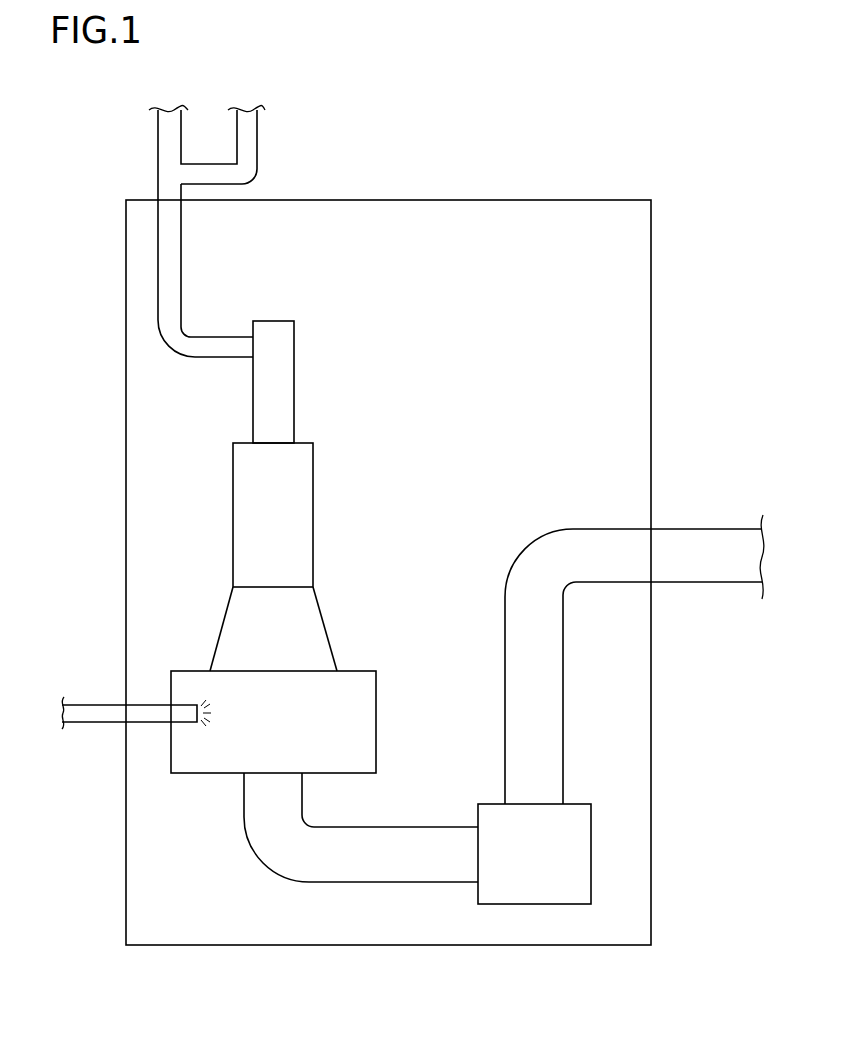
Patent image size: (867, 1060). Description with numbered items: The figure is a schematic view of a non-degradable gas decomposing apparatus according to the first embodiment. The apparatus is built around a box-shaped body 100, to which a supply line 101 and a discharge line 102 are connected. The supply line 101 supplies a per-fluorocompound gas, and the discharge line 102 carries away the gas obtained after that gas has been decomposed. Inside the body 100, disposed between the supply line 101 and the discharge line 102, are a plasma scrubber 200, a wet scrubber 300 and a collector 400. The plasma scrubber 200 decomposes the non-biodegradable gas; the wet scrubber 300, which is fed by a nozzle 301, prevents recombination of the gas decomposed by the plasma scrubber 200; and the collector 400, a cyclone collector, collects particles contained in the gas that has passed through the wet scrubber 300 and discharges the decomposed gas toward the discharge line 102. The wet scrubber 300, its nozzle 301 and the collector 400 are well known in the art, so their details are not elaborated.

The body 100 is at (652, 284).
The supply line 101 is at (167, 234).
The discharge line 102 is at (704, 565).
The plasma scrubber 200 is at (215, 509).
The wet scrubber 300 is at (172, 780).
The nozzle 301 is at (93, 708).
The collector 400 is at (534, 878).